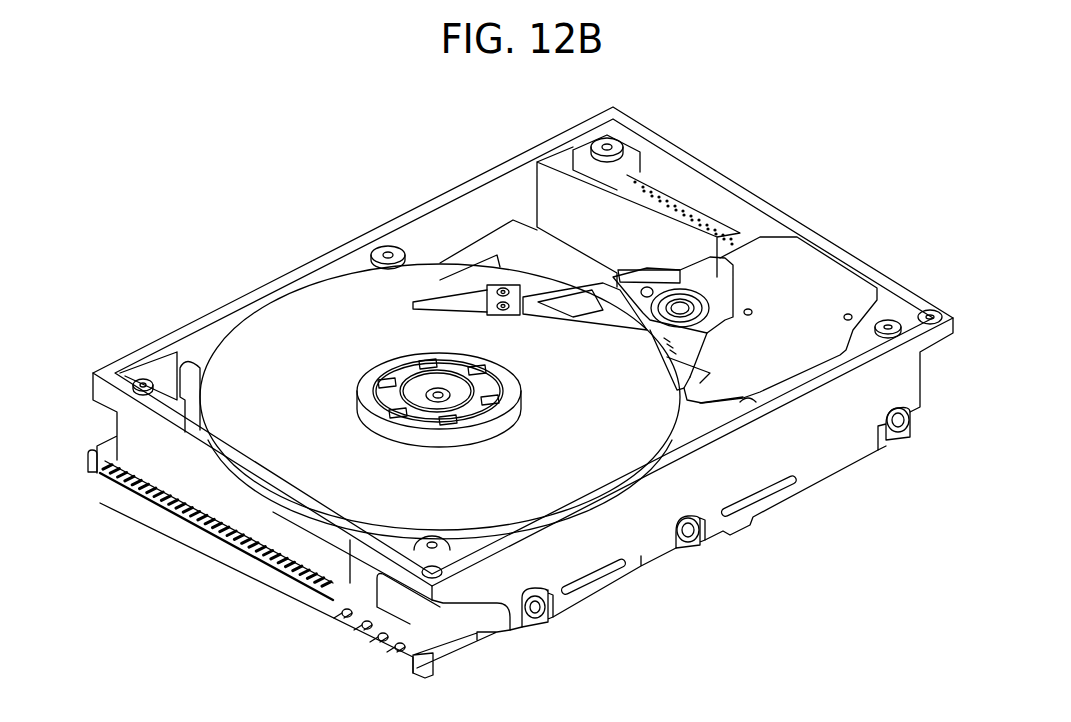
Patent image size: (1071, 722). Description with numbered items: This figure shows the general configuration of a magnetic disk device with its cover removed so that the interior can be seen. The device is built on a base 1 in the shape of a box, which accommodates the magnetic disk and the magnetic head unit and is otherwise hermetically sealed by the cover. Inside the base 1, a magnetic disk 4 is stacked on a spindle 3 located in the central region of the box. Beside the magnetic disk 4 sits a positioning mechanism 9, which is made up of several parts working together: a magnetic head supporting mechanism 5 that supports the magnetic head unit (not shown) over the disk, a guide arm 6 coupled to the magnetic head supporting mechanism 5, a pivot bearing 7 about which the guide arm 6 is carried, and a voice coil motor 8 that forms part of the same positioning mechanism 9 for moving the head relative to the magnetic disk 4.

The base 1 is at (137, 347).
The spindle 3 is at (438, 395).
The magnetic disk 4 is at (290, 337).
The magnetic head supporting mechanism 5 is at (430, 297).
The guide arm 6 is at (570, 317).
The pivot bearing 7 is at (683, 300).
The voice coil motor 8 is at (803, 262).
The positioning mechanism 9 is at (608, 243).